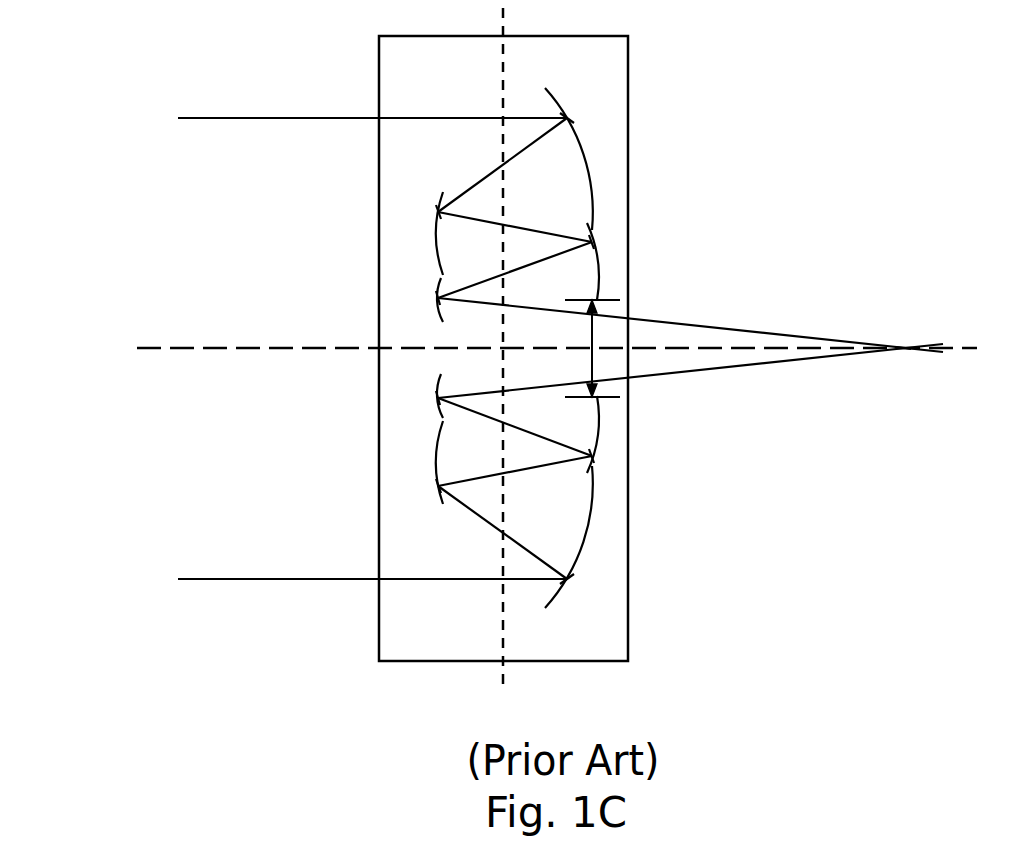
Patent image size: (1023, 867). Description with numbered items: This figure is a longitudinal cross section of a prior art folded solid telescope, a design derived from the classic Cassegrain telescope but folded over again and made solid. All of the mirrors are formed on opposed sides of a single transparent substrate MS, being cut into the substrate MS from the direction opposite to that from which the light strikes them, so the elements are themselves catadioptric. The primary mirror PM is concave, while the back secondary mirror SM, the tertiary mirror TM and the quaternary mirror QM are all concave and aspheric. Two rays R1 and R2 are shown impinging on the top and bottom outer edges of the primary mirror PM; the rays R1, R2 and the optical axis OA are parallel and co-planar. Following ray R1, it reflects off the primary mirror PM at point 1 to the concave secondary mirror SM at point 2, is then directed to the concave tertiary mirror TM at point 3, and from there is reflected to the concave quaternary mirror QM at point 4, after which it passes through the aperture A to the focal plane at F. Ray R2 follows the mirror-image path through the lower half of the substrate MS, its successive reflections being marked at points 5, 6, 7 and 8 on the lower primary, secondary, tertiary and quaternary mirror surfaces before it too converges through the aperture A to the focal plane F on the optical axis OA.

The reflection point on primary mirror 1 is at (550, 106).
The reflection point on secondary mirror 2 is at (449, 224).
The reflection point on tertiary mirror 3 is at (579, 231).
The reflection point on quaternary mirror 4 is at (453, 284).
The first reflection point on lower primary mirror 5 is at (552, 592).
The reflection point on lower secondary mirror 6 is at (446, 474).
The reflection point on lower tertiary mirror 7 is at (582, 469).
The reflection point on lower quaternary mirror 8 is at (451, 387).
The first ray R1 is at (215, 118).
The second ray R2 is at (215, 579).
The optical axis OA is at (200, 348).
The primary mirror PM is at (583, 160).
The secondary mirror SM is at (437, 232).
The tertiary mirror TM is at (595, 260).
The quaternary mirror QM is at (437, 290).
The aperture A is at (592, 338).
The focal plane F is at (907, 329).
The transparent substrate MS is at (610, 606).